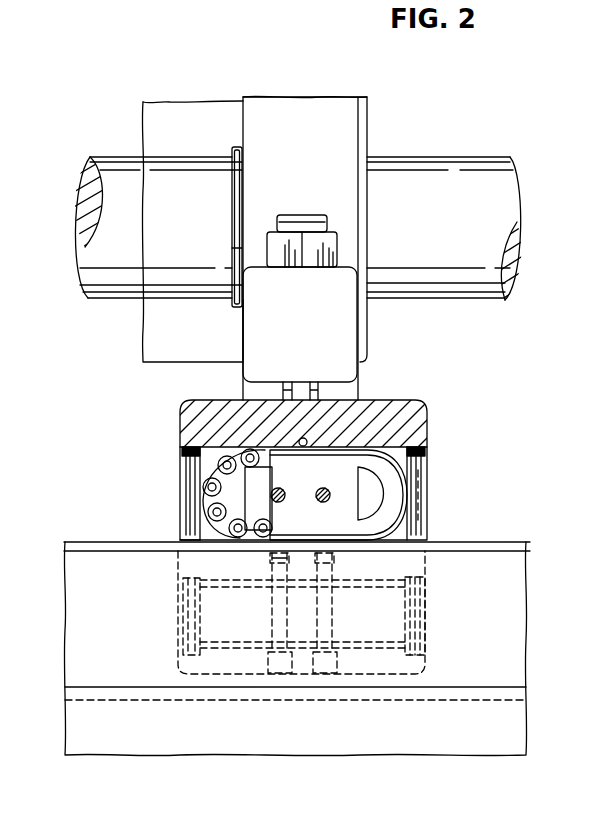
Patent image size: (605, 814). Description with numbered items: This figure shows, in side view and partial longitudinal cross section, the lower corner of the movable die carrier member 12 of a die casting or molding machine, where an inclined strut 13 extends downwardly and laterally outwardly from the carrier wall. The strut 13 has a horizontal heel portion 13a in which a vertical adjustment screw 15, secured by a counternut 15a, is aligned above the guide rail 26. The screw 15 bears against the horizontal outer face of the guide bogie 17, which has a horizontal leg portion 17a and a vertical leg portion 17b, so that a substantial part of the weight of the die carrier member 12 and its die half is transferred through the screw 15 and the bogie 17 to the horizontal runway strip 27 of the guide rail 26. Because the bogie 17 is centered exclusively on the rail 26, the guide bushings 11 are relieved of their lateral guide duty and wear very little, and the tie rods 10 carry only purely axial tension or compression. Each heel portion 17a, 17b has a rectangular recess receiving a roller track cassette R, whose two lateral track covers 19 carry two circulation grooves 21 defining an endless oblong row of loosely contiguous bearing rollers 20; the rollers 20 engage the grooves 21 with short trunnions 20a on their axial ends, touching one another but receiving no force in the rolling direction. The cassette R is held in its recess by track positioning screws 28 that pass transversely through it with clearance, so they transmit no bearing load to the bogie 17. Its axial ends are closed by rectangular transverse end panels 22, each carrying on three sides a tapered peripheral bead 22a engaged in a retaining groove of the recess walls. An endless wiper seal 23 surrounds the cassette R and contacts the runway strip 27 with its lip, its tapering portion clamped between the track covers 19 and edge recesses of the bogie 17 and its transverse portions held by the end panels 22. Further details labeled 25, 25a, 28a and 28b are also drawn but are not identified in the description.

The tie rod 10 is at (413, 177).
The guide bushing 11 is at (241, 160).
The movable die carrier member 12 is at (253, 110).
The inclined strut 13 is at (232, 328).
The horizontal heel portion 13a is at (330, 340).
The vertical adjustment screw 15 is at (320, 392).
The counternut 15a is at (337, 244).
The guide bogie 17 is at (170, 421).
The horizontal leg portion 17a is at (400, 428).
The vertical leg portion 17b is at (235, 663).
The lateral track cover 19 is at (205, 498).
The bearing roller 20 is at (216, 458).
The trunnion 20a is at (210, 460).
The circulation groove 21 is at (180, 524).
The transverse end panel 22 is at (428, 462).
The peripheral bead 22a is at (180, 436).
The wiper seal 23 is at (178, 548).
The base plate 25 is at (153, 720).
The base plate lower part 25a is at (425, 693).
The guide rail 26 is at (117, 653).
The horizontal runway strip 27 is at (520, 546).
The track positioning screw 28 is at (323, 627).
The bolt head 28a is at (272, 560).
The nut 28b is at (287, 663).
The roller track cassette R is at (428, 494).